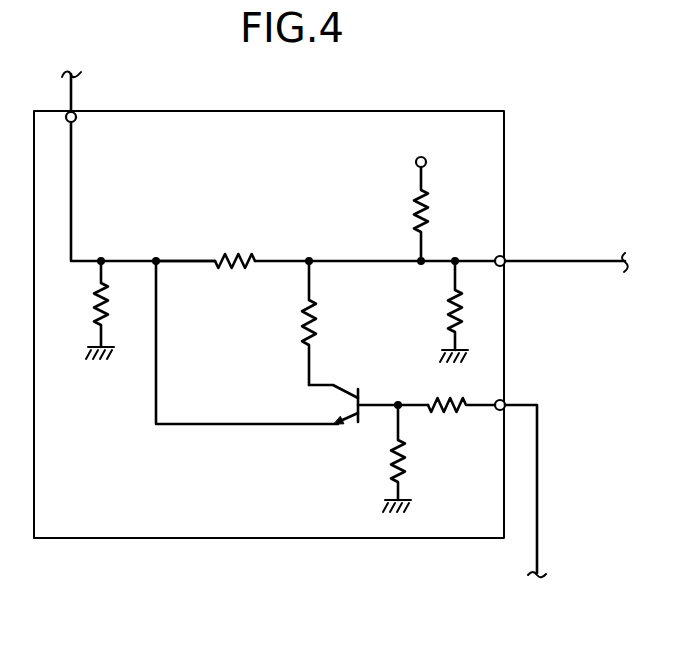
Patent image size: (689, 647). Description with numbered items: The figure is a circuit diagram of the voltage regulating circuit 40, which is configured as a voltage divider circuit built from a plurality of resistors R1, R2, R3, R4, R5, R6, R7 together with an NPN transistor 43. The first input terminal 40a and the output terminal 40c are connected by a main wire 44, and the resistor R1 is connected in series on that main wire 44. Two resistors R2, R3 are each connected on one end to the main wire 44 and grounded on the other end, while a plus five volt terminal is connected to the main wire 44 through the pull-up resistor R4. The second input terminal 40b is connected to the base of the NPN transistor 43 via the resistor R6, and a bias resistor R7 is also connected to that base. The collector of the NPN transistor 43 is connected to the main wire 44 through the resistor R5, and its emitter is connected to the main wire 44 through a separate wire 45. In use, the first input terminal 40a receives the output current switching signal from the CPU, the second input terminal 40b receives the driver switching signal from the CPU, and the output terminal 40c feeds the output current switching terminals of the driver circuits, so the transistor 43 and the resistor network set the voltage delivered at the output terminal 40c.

The voltage regulating circuit 40 is at (308, 111).
The first input terminal 40a is at (78, 120).
The second input terminal 40b is at (503, 400).
The output terminal 40c is at (503, 256).
The NPN transistor 43 is at (362, 393).
The main wire 44 is at (186, 256).
The wire 45 is at (230, 426).
The resistor R1 is at (246, 250).
The resistor R2 is at (96, 316).
The resistor R3 is at (444, 300).
The pull-up resistor R4 is at (430, 200).
The resistor R5 is at (300, 313).
The resistor R6 is at (451, 419).
The bias resistor R7 is at (388, 464).